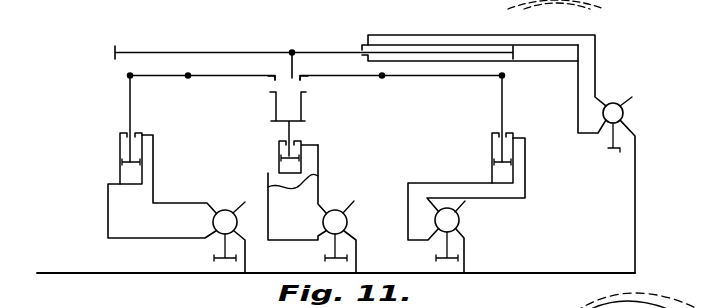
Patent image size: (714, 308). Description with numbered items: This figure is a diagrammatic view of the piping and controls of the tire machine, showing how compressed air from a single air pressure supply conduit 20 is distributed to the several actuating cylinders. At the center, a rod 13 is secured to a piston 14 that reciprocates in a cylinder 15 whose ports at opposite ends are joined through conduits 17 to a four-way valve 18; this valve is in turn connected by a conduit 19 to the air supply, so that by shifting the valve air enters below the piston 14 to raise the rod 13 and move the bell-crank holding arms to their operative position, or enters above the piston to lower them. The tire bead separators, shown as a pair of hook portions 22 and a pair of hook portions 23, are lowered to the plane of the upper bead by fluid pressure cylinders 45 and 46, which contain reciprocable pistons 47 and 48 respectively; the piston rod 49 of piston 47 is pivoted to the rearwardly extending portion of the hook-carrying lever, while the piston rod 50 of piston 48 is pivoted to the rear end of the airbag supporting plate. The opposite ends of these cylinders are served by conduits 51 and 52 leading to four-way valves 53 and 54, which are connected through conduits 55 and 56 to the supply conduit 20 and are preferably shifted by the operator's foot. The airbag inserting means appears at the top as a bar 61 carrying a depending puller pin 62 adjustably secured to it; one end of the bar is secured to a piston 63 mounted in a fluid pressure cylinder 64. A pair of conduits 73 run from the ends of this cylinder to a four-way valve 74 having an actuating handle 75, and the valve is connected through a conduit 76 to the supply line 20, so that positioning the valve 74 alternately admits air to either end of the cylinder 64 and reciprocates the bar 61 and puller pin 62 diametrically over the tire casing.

The rod 13 is at (295, 128).
The piston 14 is at (312, 147).
The cylinder 15 is at (277, 162).
The conduits 17 is at (278, 189).
The four-way valve 18 is at (344, 206).
The conduit 19 is at (356, 252).
The air pressure supply conduit 20 is at (336, 287).
The hook portions 22 is at (303, 79).
The hook portions 23 is at (273, 78).
The fluid pressure cylinder 45 is at (492, 173).
The fluid pressure cylinder 46 is at (120, 172).
The piston 47 is at (495, 160).
The piston 48 is at (126, 155).
The piston rod 49 is at (502, 115).
The piston rod 50 is at (130, 114).
The conduits 51 is at (455, 197).
The conduits 52 is at (153, 193).
The four-way valve 53 is at (450, 220).
The four-way valve 54 is at (221, 210).
The conduit 55 is at (465, 252).
The conduit 56 is at (269, 261).
The bar 61 is at (325, 51).
The puller pin 62 is at (288, 61).
The piston 63 is at (513, 47).
The fluid pressure cylinder 64 is at (544, 80).
The conduits 73 is at (578, 88).
The four-way valve 74 is at (620, 113).
The actuating handle 75 is at (612, 154).
The conduit 76 is at (636, 198).